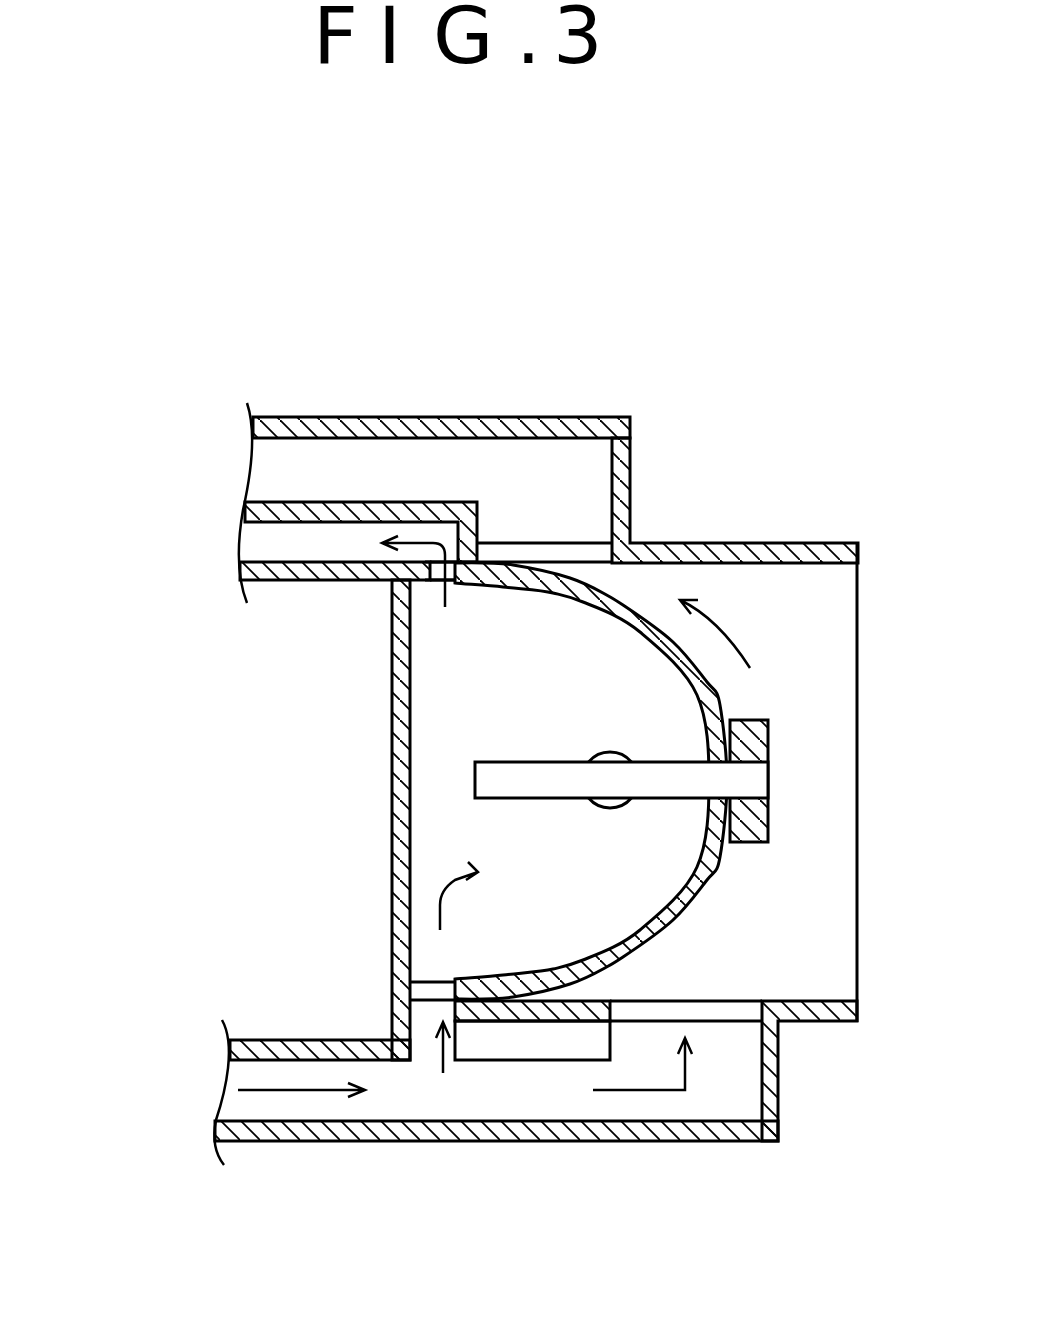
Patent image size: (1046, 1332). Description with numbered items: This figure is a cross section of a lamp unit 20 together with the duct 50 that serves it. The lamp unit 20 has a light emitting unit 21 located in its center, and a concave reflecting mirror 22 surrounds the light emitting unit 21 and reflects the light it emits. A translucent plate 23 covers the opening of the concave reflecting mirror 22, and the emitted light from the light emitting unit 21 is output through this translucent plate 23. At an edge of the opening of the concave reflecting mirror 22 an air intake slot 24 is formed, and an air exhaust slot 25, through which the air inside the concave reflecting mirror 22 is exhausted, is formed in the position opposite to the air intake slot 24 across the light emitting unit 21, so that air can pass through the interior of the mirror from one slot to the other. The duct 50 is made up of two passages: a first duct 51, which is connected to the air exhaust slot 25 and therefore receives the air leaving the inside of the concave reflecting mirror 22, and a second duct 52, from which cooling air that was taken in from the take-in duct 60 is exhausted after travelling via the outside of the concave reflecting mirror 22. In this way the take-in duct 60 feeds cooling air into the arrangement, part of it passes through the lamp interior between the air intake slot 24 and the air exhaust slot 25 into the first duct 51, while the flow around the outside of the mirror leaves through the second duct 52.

The lamp unit 20 is at (772, 396).
The light emitting unit 21 is at (525, 798).
The concave reflecting mirror 22 is at (688, 905).
The translucent plate 23 is at (393, 732).
The air intake slot 24 is at (428, 990).
The air exhaust slot 25 is at (437, 565).
The duct 50 is at (337, 503).
The first duct 51 is at (292, 545).
The second duct 52 is at (287, 477).
The take-in duct 60 is at (253, 1080).